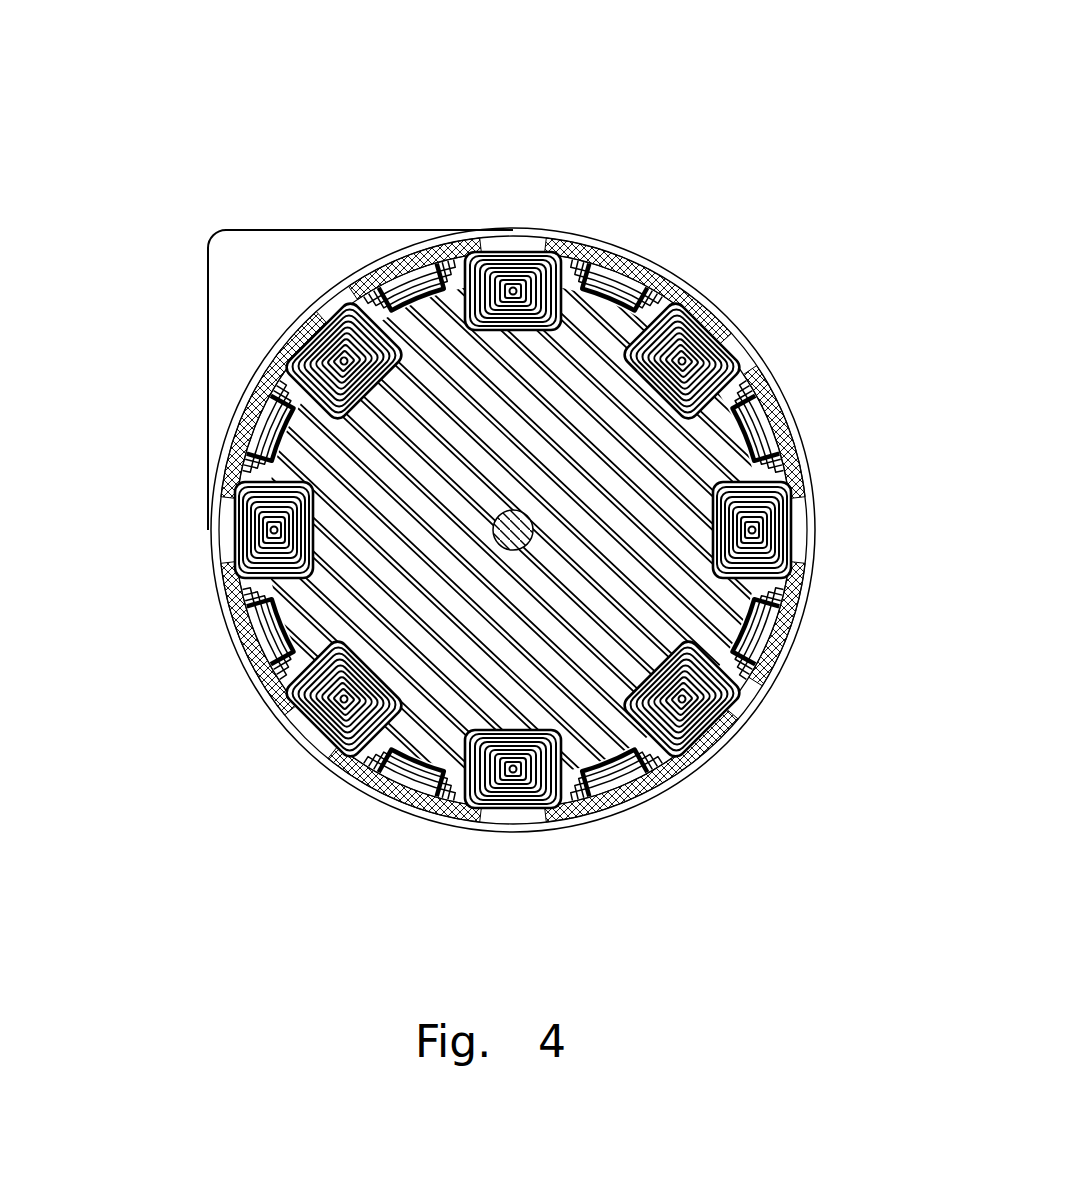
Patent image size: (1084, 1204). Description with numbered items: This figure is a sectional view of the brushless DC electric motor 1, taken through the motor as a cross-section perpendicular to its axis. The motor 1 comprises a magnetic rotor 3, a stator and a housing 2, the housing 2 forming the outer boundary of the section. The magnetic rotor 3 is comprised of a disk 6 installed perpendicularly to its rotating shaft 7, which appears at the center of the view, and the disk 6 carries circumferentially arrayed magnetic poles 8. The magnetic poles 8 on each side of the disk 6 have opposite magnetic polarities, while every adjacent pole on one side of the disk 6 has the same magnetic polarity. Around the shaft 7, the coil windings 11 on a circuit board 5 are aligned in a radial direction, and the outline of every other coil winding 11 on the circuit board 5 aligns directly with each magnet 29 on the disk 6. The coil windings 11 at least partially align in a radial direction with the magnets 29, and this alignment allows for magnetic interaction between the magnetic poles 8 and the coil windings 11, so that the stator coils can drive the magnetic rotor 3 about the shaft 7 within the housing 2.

The brushless DC electric motor 1 is at (195, 128).
The housing 2 is at (333, 768).
The magnetic rotor 3 is at (340, 612).
The circuit board 5 is at (757, 680).
The disk 6 is at (590, 413).
The rotating shaft 7 is at (525, 527).
The magnetic pole 8 is at (285, 440).
The coil winding 11 is at (640, 278).
The magnet 29 is at (722, 627).